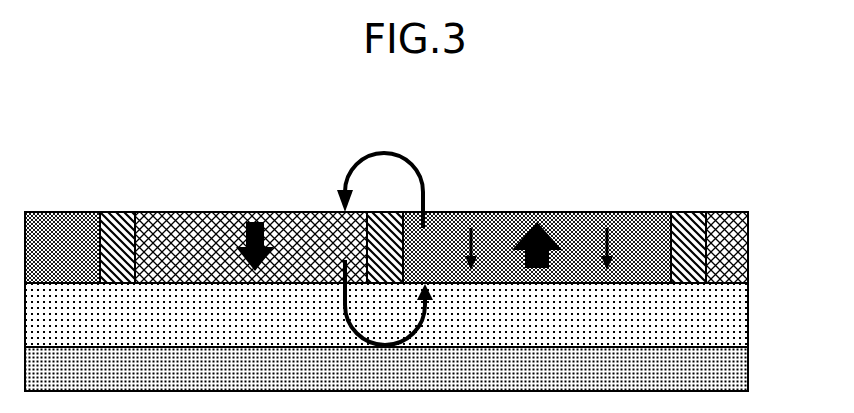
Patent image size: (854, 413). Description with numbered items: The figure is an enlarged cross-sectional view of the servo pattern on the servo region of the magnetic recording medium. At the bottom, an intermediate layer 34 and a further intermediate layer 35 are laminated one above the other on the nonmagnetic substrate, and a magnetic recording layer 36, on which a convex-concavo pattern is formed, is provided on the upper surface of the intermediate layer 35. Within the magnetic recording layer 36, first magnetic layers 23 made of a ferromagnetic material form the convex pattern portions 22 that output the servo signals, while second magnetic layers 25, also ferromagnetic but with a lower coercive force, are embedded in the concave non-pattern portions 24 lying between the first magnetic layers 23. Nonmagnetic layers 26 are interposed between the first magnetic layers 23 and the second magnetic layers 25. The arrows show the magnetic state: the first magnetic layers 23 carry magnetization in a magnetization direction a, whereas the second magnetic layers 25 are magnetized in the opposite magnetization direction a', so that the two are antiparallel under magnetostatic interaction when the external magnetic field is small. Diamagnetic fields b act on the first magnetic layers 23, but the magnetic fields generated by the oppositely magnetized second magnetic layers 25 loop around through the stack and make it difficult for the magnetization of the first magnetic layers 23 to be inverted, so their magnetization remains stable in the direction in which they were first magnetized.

The pattern portion 22 is at (638, 224).
The first magnetic layer 23 is at (40, 224).
The non-pattern portion 24 is at (300, 224).
The second magnetic layer 25 is at (175, 224).
The nonmagnetic layer 26 is at (117, 224).
The intermediate layer 34 is at (728, 365).
The intermediate layer 35 is at (728, 310).
The magnetic recording layer 36 is at (732, 246).
The magnetization direction a' is at (255, 209).
The magnetization direction a is at (537, 207).
The diamagnetic field b is at (478, 224).